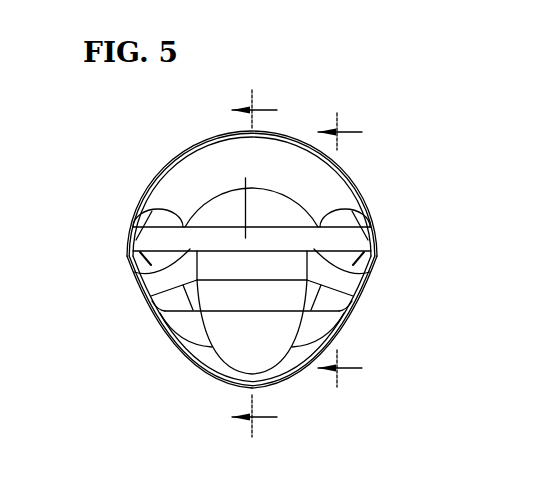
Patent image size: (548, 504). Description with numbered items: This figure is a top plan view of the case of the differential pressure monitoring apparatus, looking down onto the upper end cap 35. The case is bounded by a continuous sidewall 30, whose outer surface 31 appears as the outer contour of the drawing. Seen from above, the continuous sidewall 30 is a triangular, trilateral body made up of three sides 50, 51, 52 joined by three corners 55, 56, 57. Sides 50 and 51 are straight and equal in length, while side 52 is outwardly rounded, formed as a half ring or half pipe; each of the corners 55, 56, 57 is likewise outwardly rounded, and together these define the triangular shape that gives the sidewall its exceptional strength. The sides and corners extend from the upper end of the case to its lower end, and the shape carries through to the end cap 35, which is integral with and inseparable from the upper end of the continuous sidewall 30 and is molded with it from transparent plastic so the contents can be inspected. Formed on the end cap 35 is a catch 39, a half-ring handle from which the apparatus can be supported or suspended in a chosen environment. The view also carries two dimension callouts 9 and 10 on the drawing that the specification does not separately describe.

The offset distance 9 is at (264, 263).
The wall offset distance 10 is at (355, 250).
The continuous sidewall 30 is at (347, 325).
The outer surface 31 is at (176, 356).
The end cap 35 is at (333, 185).
The catch 39 is at (254, 195).
The side 50 is at (150, 291).
The side 51 is at (352, 297).
The side 52 is at (176, 158).
The corner 55 is at (128, 238).
The corner 56 is at (378, 238).
The corner 57 is at (228, 388).